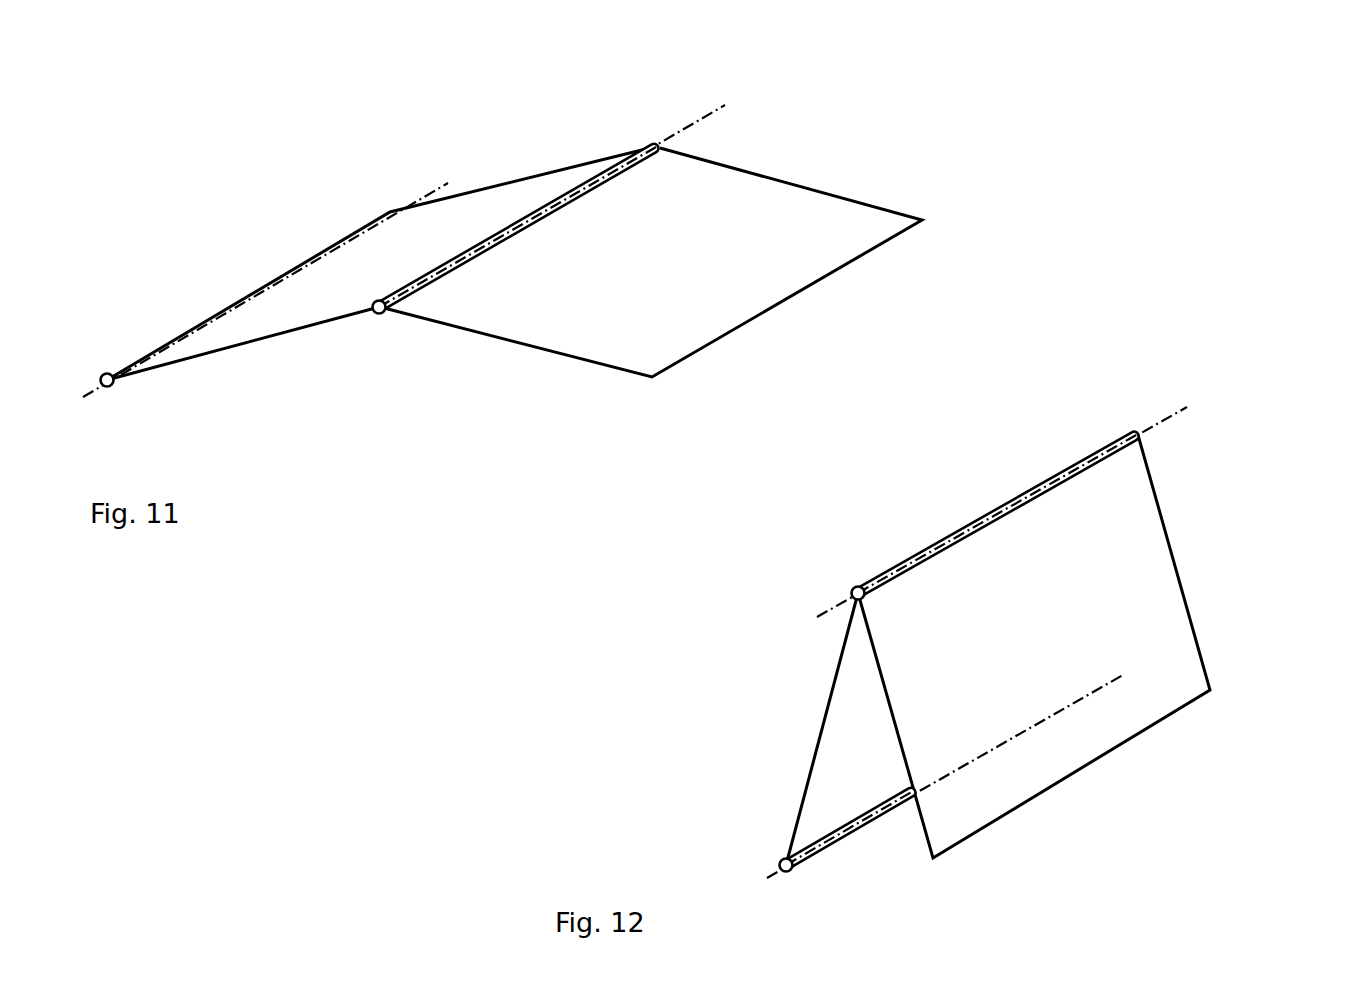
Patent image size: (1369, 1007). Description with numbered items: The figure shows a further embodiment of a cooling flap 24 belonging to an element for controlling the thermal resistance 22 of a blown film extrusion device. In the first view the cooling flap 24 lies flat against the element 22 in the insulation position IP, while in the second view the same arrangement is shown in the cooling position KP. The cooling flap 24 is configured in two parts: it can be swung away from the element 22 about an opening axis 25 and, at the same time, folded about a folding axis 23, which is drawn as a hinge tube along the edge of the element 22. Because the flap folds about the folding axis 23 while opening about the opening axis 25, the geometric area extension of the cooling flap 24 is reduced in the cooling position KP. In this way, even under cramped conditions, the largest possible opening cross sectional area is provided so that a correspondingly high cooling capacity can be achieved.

In FIG. 11, the element for controlling the thermal resistance 22 is at (506, 112).
In FIG. 12, the element for controlling the thermal resistance 22 is at (1040, 411).
In FIG. 11, the folding axis 23 is at (362, 320).
In FIG. 12, the folding axis 23 is at (1170, 413).
In FIG. 11, the cooling flap 24 is at (384, 220).
In FIG. 12, the cooling flap 24 is at (786, 702).
In FIG. 11, the opening axis 25 is at (86, 396).
In FIG. 12, the opening axis 25 is at (760, 887).
In FIG. 11, the insulation position IP is at (298, 422).
In FIG. 12, the cooling position KP is at (1252, 582).